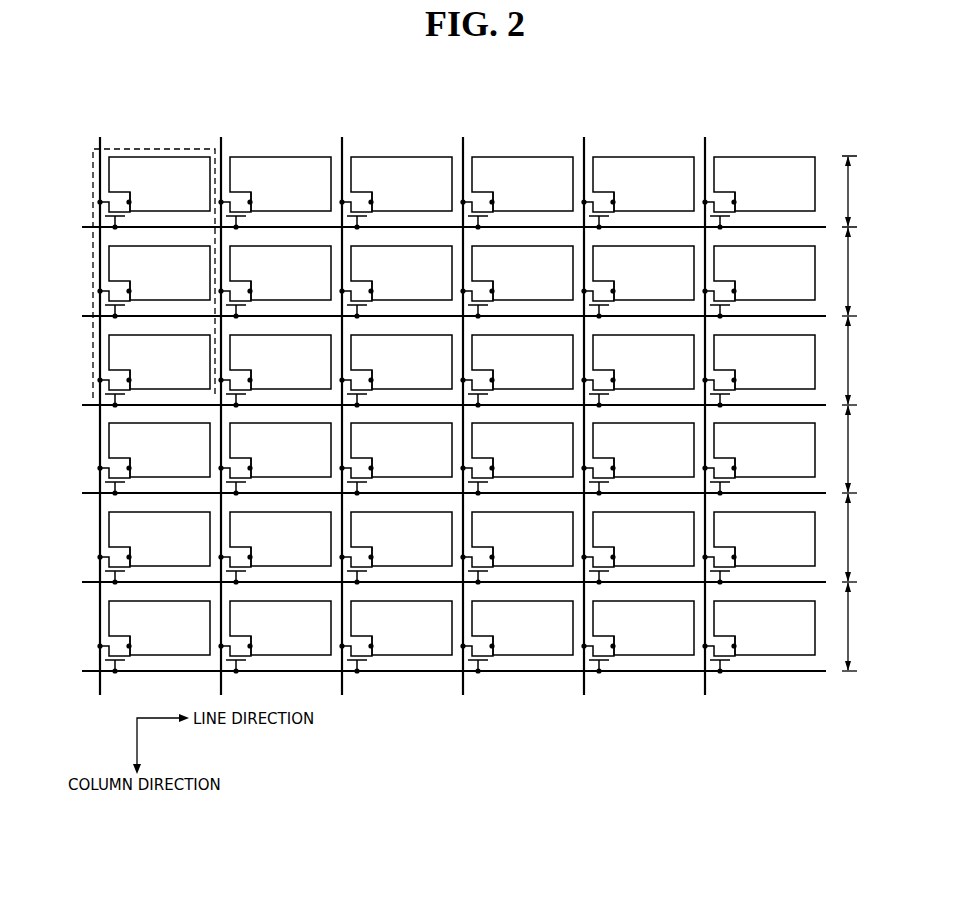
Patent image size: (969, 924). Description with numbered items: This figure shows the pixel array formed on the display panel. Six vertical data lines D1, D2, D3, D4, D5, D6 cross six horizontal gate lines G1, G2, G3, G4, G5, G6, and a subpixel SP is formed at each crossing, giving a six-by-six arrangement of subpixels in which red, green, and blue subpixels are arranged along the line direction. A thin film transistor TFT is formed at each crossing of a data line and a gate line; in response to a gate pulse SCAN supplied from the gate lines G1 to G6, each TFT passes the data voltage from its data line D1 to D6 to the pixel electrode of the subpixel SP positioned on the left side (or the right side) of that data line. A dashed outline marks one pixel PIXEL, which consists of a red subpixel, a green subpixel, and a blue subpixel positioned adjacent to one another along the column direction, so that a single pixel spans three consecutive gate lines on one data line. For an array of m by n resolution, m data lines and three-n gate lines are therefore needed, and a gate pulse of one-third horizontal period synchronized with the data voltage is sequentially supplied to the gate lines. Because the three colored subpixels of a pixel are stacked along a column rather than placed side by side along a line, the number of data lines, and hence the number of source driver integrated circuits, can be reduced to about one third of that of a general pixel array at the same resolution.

The subpixel SP is at (462, 406).
The thin film transistor TFT is at (104, 219).
The pixel PIXEL is at (155, 148).
The data line D1 is at (100, 407).
The data line D2 is at (221, 407).
The data line D3 is at (342, 407).
The data line D4 is at (463, 407).
The data line D5 is at (584, 407).
The data line D6 is at (705, 407).
The gate line G1 is at (443, 227).
The gate line G2 is at (443, 316).
The gate line G3 is at (443, 405).
The gate line G4 is at (443, 493).
The gate line G5 is at (443, 582).
The gate line G6 is at (443, 671).